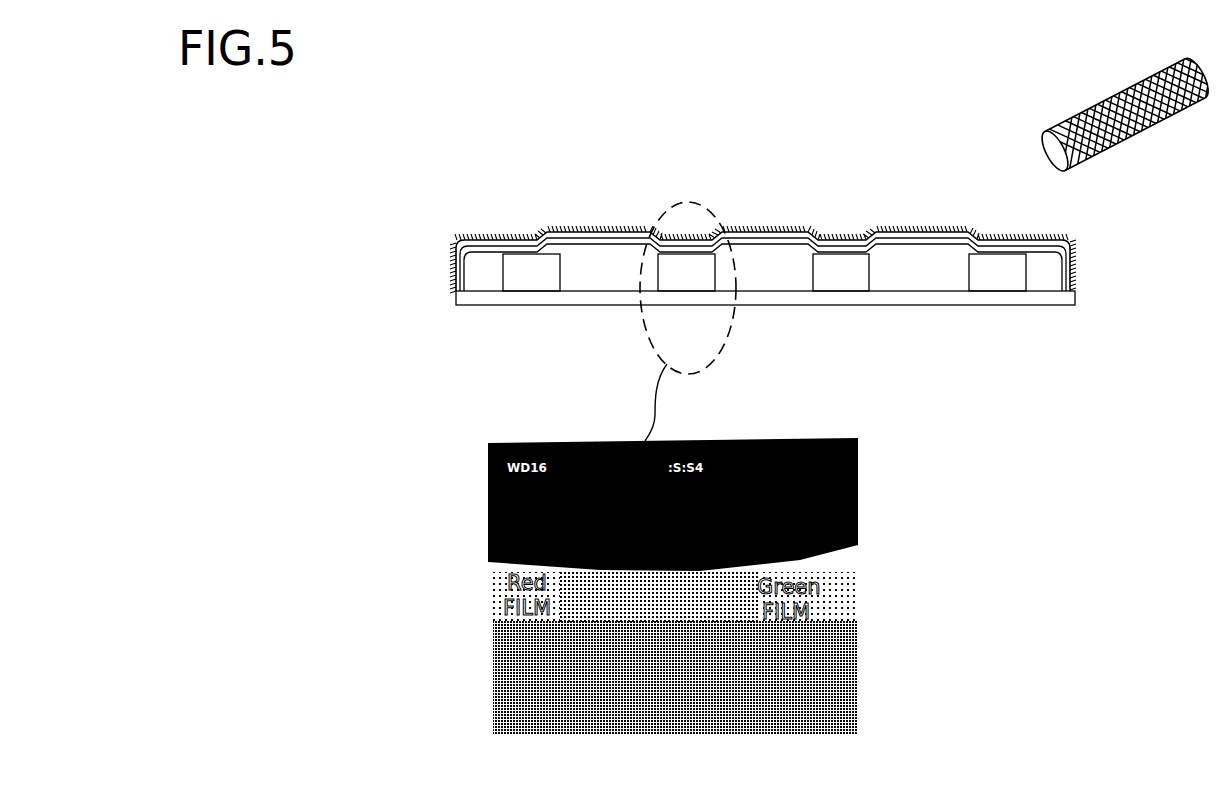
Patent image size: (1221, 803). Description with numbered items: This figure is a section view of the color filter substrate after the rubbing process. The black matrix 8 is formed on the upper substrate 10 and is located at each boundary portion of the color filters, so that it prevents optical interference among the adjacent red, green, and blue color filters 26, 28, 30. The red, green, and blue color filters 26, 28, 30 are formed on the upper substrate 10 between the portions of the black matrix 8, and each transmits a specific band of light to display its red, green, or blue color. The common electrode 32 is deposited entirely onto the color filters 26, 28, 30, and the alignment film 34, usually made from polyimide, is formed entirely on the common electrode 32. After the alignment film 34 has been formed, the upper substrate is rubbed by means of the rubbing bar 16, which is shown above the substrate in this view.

The black matrix 8 is at (535, 286).
The upper substrate 10 is at (1078, 297).
The rubbing bar 16 is at (1110, 110).
The red color filter 26 is at (608, 285).
The green color filter 28 is at (764, 285).
The blue color filter 30 is at (918, 285).
The common electrode 32 is at (983, 234).
The alignment film 34 is at (963, 229).